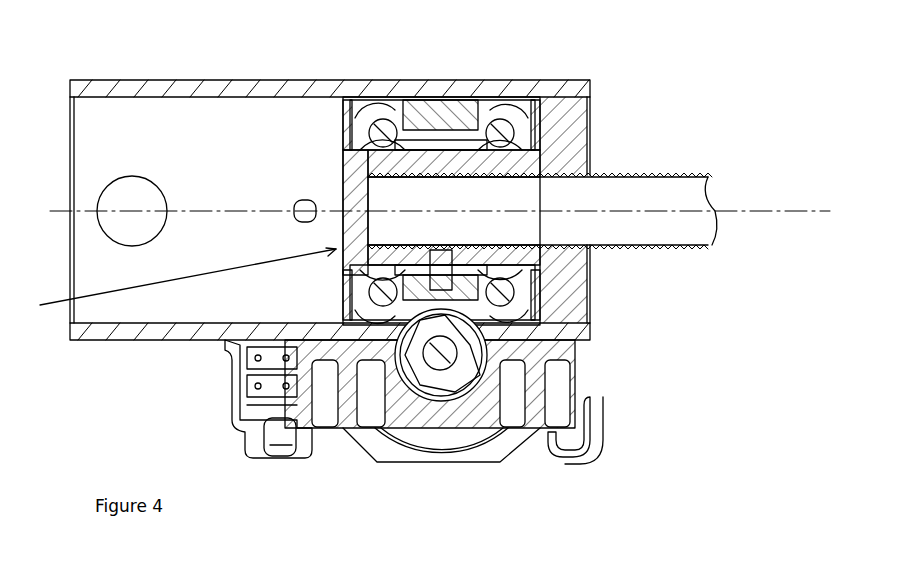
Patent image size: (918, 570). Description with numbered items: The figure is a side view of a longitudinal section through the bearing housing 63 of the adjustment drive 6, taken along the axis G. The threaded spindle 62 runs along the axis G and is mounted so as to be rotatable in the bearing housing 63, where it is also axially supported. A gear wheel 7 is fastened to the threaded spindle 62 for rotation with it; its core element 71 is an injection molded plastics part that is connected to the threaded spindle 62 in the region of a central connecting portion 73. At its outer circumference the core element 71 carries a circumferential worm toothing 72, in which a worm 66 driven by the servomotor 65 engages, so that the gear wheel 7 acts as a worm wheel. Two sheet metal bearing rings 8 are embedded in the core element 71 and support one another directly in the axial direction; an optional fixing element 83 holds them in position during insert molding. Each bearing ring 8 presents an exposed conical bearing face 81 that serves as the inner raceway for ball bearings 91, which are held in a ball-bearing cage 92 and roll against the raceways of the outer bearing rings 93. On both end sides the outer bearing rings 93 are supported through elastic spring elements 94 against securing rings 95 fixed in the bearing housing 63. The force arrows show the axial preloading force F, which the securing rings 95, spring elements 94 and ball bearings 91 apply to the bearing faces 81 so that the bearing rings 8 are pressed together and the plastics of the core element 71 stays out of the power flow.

The adjustment drive 6 is at (637, 60).
The gear wheel 7 is at (183, 282).
The bearing ring 8 is at (411, 100).
The threaded spindle 62 is at (658, 195).
The bearing housing 63 is at (202, 90).
The servomotor 65 is at (506, 440).
The worm 66 is at (445, 372).
The core element 71 is at (560, 272).
The toothing 72 is at (441, 97).
The connecting portion 73 is at (472, 440).
The bearing face 81 is at (250, 390).
The fixing element 83 is at (588, 430).
The ball bearing 91 is at (377, 103).
The ball-bearing cage 92 is at (345, 430).
The outer bearing ring 93 is at (362, 108).
The spring element 94 is at (343, 90).
The securing ring 95 is at (340, 105).
The preloading force F is at (342, 143).
The axis G is at (712, 210).